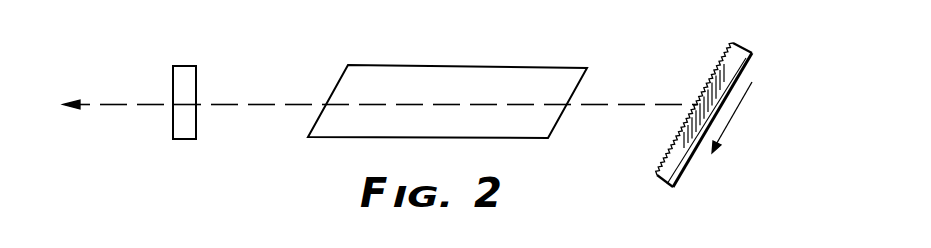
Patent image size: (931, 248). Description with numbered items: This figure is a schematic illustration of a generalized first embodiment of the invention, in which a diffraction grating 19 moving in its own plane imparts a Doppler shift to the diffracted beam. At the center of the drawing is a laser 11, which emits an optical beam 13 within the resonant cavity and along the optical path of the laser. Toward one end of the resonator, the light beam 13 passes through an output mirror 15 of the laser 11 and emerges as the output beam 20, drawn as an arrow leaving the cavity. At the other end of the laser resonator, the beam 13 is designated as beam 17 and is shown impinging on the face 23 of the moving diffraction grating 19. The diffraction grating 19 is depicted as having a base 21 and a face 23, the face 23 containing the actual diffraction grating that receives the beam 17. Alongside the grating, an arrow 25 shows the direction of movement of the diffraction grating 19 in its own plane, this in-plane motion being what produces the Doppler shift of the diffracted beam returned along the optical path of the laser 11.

The laser 11 is at (448, 54).
The optical beam 13 is at (263, 95).
The output mirror 15 is at (191, 66).
The beam 17 is at (645, 118).
The diffraction grating 19 is at (744, 119).
The output beam 20 is at (87, 93).
The base 21 is at (688, 163).
The face 23 is at (710, 88).
The arrow 25 is at (737, 121).